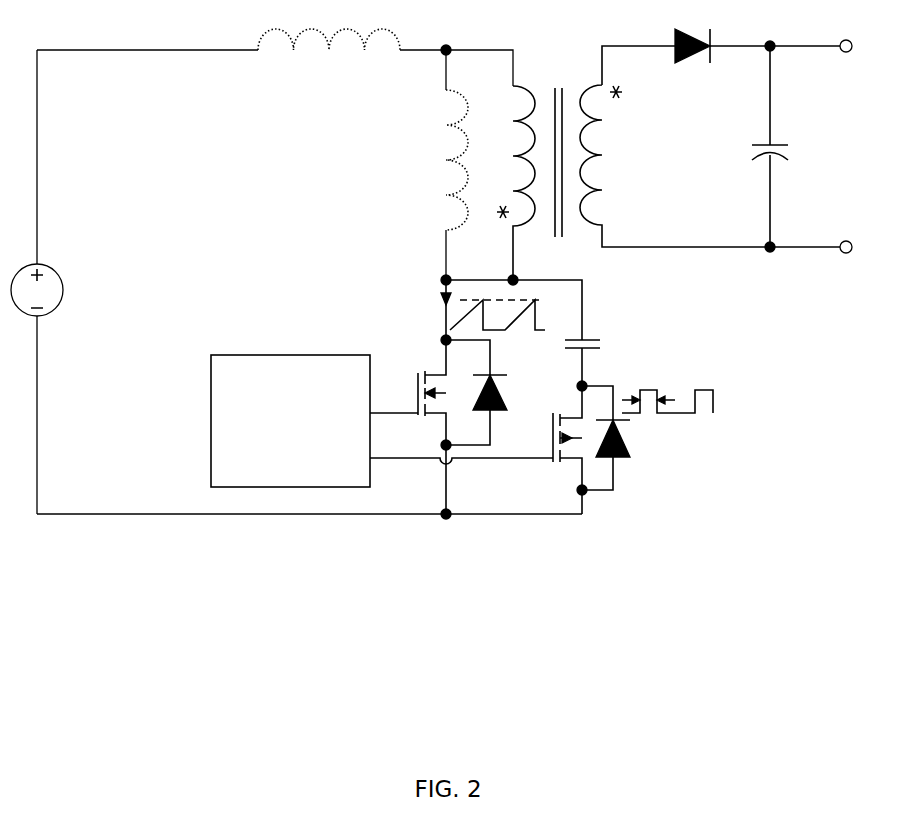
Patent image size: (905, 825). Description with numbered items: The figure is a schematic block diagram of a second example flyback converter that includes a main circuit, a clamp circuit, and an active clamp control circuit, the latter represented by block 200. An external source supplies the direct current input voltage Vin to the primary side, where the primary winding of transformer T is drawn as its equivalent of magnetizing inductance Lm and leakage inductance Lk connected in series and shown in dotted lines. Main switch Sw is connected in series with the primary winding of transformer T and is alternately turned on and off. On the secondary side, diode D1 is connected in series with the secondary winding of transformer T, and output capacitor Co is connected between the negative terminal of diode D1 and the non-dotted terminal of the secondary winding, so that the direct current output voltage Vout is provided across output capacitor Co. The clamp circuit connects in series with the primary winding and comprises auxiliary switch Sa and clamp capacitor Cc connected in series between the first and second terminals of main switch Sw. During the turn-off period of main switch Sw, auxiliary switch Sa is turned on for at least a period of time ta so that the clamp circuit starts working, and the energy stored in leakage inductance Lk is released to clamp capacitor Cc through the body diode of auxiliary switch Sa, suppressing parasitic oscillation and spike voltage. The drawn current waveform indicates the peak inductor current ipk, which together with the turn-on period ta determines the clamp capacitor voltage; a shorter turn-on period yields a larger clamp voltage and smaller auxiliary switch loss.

The controller 200 is at (272, 432).
The direct current input voltage Vin is at (49, 282).
The leakage inductance Lk is at (329, 53).
The magnetizing inductance Lm is at (437, 165).
The transformer T is at (633, 163).
The diode D1 is at (735, 40).
The output capacitor Co is at (752, 146).
The direct current output voltage Vout is at (811, 146).
The main switch Sw is at (438, 392).
The auxiliary switch Sa is at (607, 450).
The clamp capacitor Cc is at (598, 355).
The peak value of the inductor current ipk is at (504, 310).
The turn-on period of the auxiliary switch ta is at (667, 386).